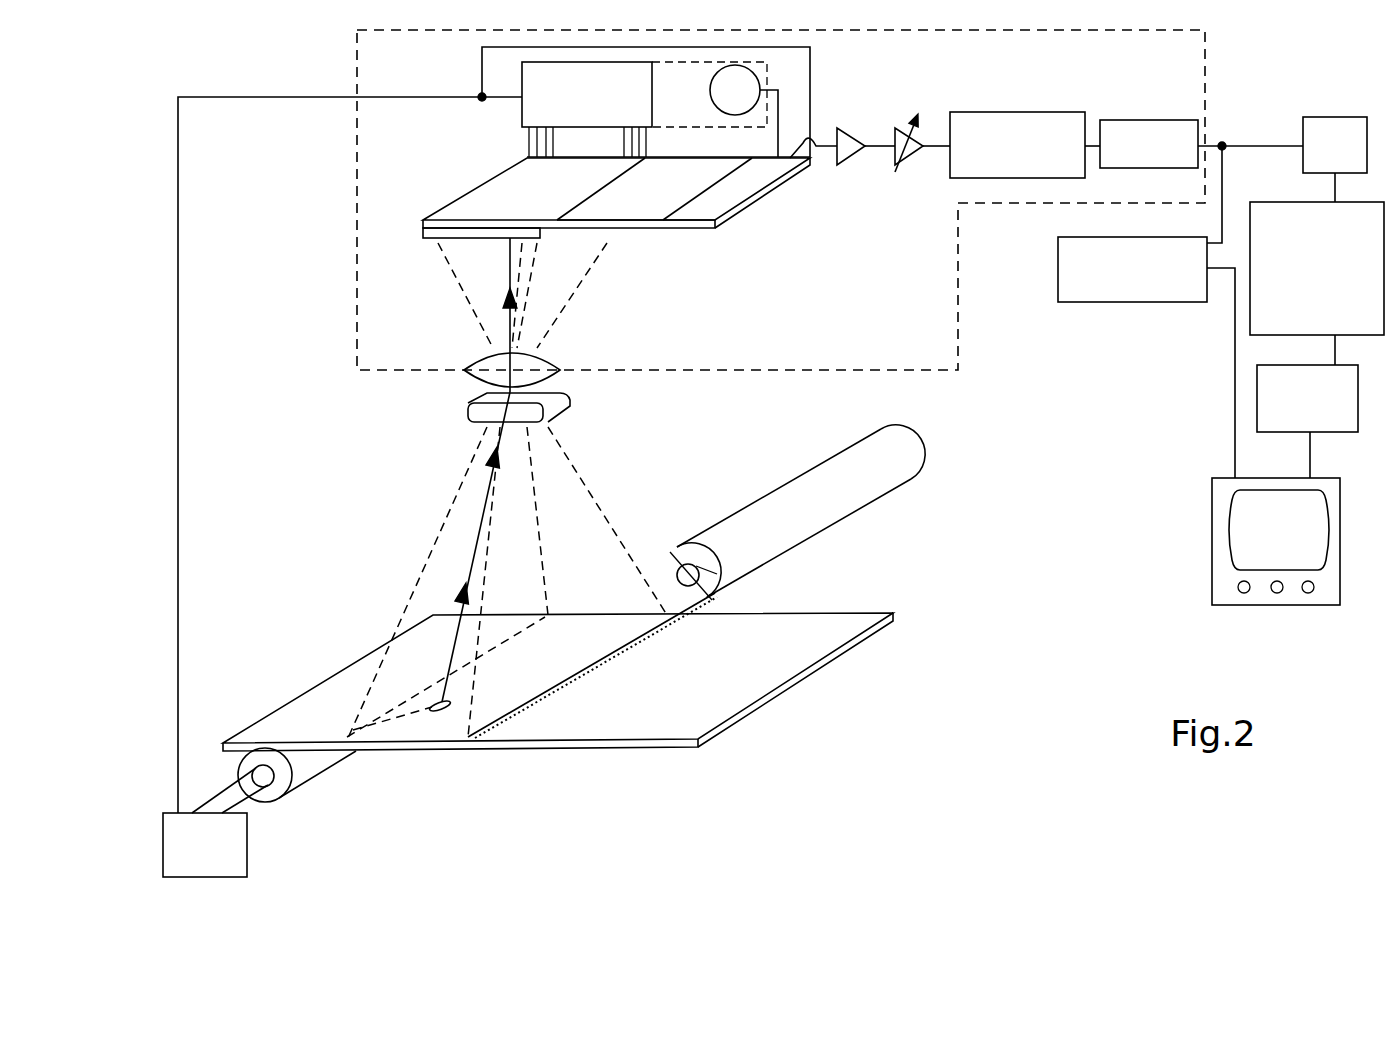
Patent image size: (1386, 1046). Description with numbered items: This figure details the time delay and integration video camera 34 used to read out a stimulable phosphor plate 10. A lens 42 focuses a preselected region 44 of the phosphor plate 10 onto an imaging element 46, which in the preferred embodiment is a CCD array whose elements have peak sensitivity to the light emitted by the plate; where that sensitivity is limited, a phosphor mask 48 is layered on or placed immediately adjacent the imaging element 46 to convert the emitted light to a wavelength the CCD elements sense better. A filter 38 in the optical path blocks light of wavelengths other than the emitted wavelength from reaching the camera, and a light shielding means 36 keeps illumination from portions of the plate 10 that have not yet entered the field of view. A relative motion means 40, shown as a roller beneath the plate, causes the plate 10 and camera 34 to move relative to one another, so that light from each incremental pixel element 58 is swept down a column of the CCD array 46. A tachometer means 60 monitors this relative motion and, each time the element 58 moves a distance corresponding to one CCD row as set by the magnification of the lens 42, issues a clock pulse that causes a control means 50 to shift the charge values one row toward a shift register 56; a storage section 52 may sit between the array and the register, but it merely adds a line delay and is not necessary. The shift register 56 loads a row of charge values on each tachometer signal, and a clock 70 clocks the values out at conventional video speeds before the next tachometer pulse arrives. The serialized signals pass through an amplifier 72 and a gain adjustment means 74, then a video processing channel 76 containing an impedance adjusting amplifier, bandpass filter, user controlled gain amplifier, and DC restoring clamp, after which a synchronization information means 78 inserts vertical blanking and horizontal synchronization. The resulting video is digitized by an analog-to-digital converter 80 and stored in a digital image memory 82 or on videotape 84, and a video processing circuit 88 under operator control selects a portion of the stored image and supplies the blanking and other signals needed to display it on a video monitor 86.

The stimulable phosphor plate 10 is at (733, 725).
The time delay and integration video camera 34 is at (962, 345).
The light shielding means 36 is at (878, 460).
The filter 38 is at (570, 405).
The relative motion means 40 is at (270, 797).
The lens 42 is at (545, 358).
The preselected region 44 is at (592, 665).
The imaging element 46 is at (512, 193).
The phosphor mask 48 is at (432, 238).
The control means 50 is at (522, 104).
The storage section 52 is at (640, 228).
The shift register 56 is at (750, 205).
The pixel element 58 is at (436, 702).
The tachometer means 60 is at (247, 853).
The clock 70 is at (710, 90).
The amplifier 72 is at (851, 157).
The gain adjustment means 74 is at (906, 153).
The video processing channel 76 is at (1025, 112).
The synchronization information means 78 is at (1170, 120).
The analog-to-digital converter 80 is at (1303, 125).
The digital image memory 82 is at (1305, 202).
The videotape 84 is at (1082, 304).
The video monitor 86 is at (1212, 530).
The video processing circuit 88 is at (1320, 432).